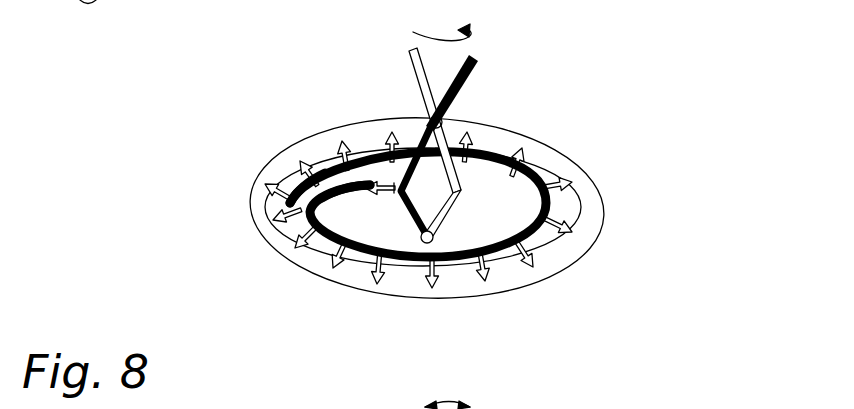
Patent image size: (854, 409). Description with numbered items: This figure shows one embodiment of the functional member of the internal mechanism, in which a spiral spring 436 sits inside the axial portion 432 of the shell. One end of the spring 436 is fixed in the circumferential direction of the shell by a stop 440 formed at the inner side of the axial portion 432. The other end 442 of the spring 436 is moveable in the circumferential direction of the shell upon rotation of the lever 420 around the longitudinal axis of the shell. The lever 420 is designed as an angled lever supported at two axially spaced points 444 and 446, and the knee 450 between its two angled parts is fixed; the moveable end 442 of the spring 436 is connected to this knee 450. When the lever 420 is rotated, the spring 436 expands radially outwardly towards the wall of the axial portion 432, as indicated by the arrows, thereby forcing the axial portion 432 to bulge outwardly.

The lever 420 is at (467, 88).
The axial portion of the shell 432 is at (566, 246).
The spiral spring 436 is at (556, 176).
The stop 440 is at (290, 204).
The other end of the spring 442 is at (364, 189).
The support point 444 is at (433, 243).
The support point 446 is at (418, 122).
The knee 450 is at (368, 170).